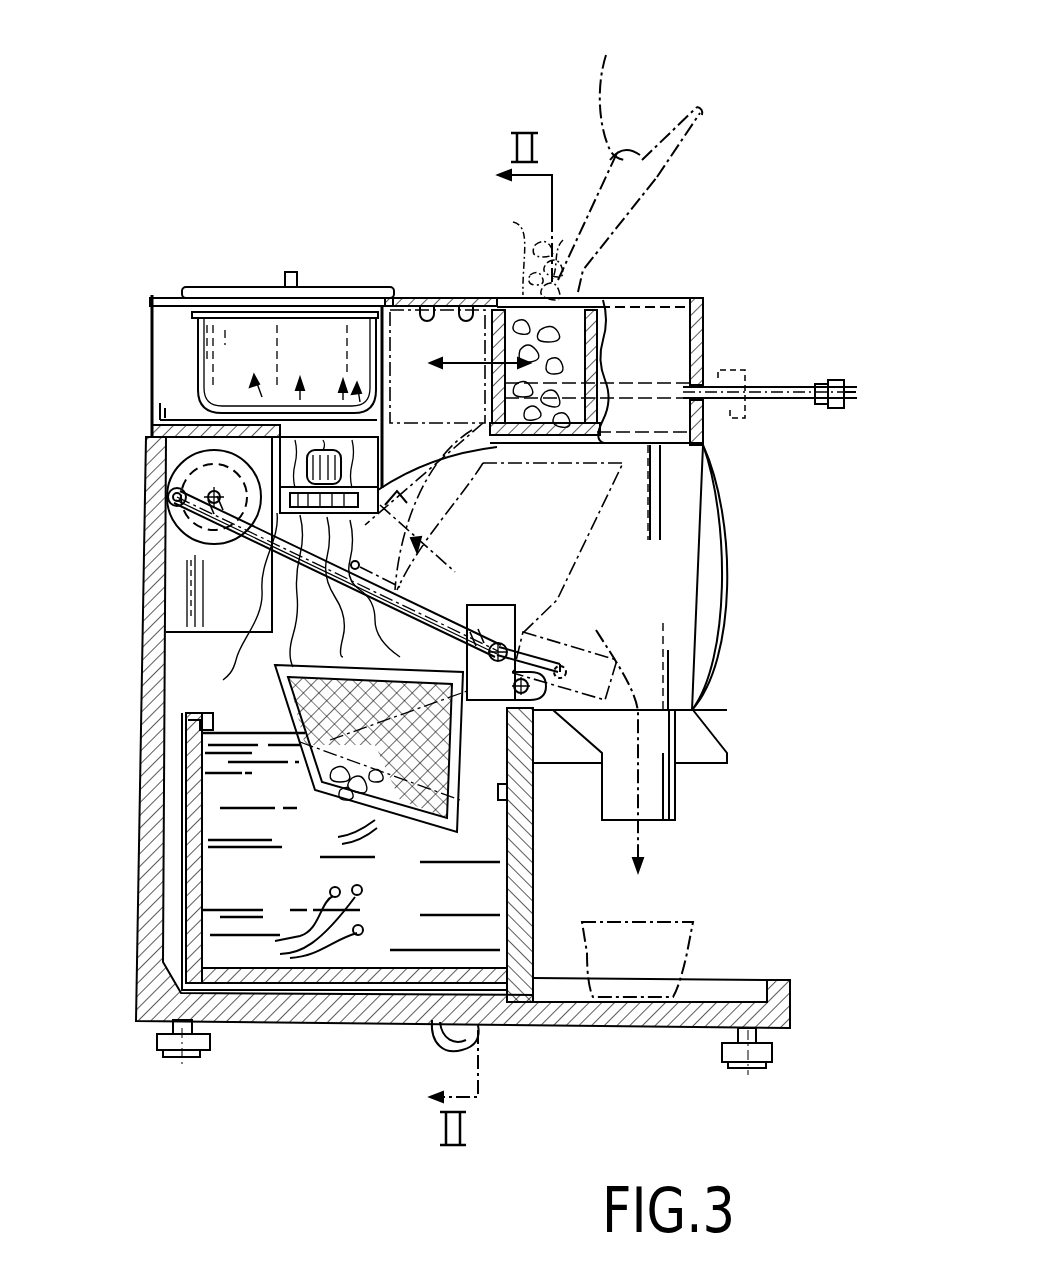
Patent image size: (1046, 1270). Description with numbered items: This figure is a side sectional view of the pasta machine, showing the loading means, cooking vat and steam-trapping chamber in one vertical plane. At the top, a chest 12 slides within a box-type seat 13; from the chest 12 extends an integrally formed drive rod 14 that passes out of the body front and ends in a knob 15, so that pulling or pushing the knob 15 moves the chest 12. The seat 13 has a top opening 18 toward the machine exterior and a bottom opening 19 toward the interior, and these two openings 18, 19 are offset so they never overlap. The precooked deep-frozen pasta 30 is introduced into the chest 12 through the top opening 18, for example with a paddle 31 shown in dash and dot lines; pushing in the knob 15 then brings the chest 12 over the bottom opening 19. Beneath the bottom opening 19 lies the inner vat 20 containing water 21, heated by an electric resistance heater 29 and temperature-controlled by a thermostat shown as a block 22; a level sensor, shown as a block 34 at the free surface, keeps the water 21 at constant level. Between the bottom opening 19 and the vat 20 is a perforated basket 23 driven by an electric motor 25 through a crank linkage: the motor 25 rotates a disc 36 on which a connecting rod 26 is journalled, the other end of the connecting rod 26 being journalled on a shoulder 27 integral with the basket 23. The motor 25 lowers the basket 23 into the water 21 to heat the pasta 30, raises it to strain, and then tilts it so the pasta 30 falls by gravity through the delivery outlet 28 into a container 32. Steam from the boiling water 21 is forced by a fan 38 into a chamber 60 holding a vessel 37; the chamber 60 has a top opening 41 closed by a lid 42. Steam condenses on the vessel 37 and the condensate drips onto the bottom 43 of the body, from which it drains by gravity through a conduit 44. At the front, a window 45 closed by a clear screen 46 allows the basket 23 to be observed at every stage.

The chest 12 is at (582, 300).
The box-type seat 13 is at (452, 310).
The drive rod 14 is at (771, 387).
The knob 15 is at (836, 380).
The top opening 18 is at (574, 297).
The bottom opening 19 is at (423, 447).
The inner vat 20 is at (175, 880).
The water 21 is at (227, 821).
The thermostat 22 is at (535, 800).
The perforated basket 23 is at (306, 698).
The electric motor 25 is at (192, 483).
The connecting rod 26 is at (195, 565).
The shoulder 27 is at (486, 605).
The delivery outlet 28 is at (680, 812).
The electric resistance heater 29 is at (302, 924).
The precooked deep-frozen pasta 30 is at (513, 230).
The paddle 31 is at (599, 89).
The container 32 is at (663, 950).
The level sensor 34 is at (200, 718).
The disc 36 is at (195, 527).
The vessel 37 is at (222, 353).
The fan 38 is at (272, 458).
The top opening 41 is at (338, 298).
The lid 42 is at (222, 287).
The bottom 43 is at (263, 1005).
The conduit 44 is at (430, 1045).
The window 45 is at (755, 560).
The clear screen 46 is at (724, 527).
The chamber 60 is at (176, 326).